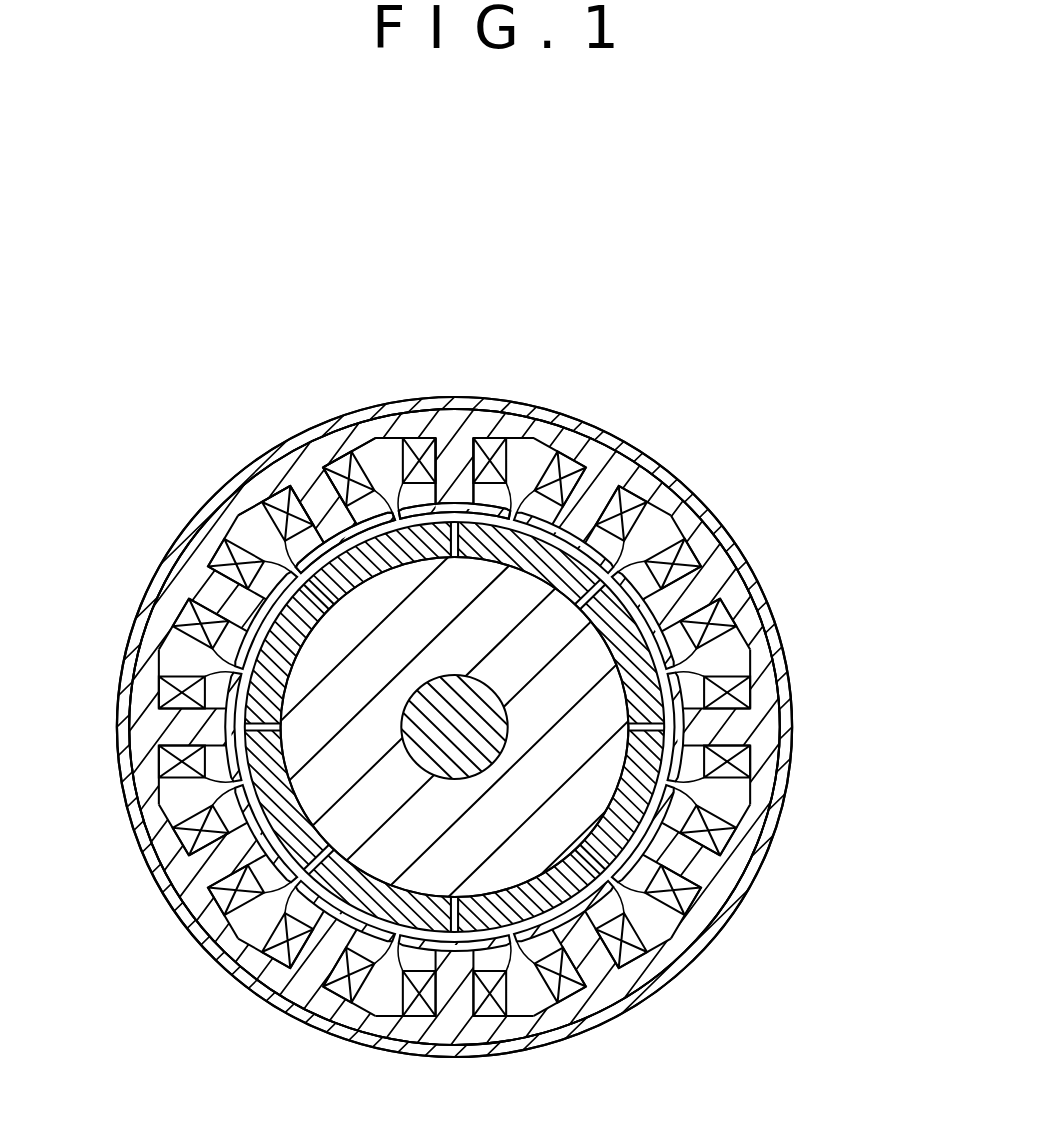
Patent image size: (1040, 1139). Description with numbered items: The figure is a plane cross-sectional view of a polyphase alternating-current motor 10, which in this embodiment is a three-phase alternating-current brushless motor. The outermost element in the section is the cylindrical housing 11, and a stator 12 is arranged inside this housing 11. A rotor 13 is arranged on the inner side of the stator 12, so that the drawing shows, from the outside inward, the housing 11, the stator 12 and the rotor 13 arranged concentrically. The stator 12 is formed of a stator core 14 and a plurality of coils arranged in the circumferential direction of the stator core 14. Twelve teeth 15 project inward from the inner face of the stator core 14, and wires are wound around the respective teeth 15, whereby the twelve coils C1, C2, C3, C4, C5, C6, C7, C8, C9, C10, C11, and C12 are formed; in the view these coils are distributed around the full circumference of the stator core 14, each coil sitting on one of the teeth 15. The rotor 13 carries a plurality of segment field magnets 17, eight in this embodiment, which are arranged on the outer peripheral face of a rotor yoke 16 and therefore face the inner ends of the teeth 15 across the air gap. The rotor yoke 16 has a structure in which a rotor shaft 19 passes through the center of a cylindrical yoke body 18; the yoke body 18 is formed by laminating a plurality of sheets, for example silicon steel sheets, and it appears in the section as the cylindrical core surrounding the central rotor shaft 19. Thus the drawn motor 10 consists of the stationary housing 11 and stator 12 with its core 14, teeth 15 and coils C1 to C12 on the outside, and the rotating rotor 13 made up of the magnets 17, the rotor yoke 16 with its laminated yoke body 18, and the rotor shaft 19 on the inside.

The polyphase alternating-current motor 10 is at (711, 212).
The housing 11 is at (233, 477).
The stator 12 is at (493, 397).
The rotor 13 is at (513, 517).
The stator core 14 is at (383, 440).
The teeth 15 is at (307, 490).
The rotor yoke 16 is at (520, 710).
The segment field magnets 17 is at (584, 588).
The yoke body 18 is at (558, 643).
The rotor shaft 19 is at (487, 727).
The coil C1 is at (725, 814).
The coil C2 is at (648, 936).
The coil C3 is at (507, 995).
The coil C4 is at (368, 993).
The coil C5 is at (238, 915).
The coil C6 is at (182, 778).
The coil C7 is at (232, 597).
The coil C8 is at (279, 530).
The coil C9 is at (420, 440).
The coil C10 is at (566, 472).
The coil C11 is at (706, 558).
The coil C12 is at (748, 676).